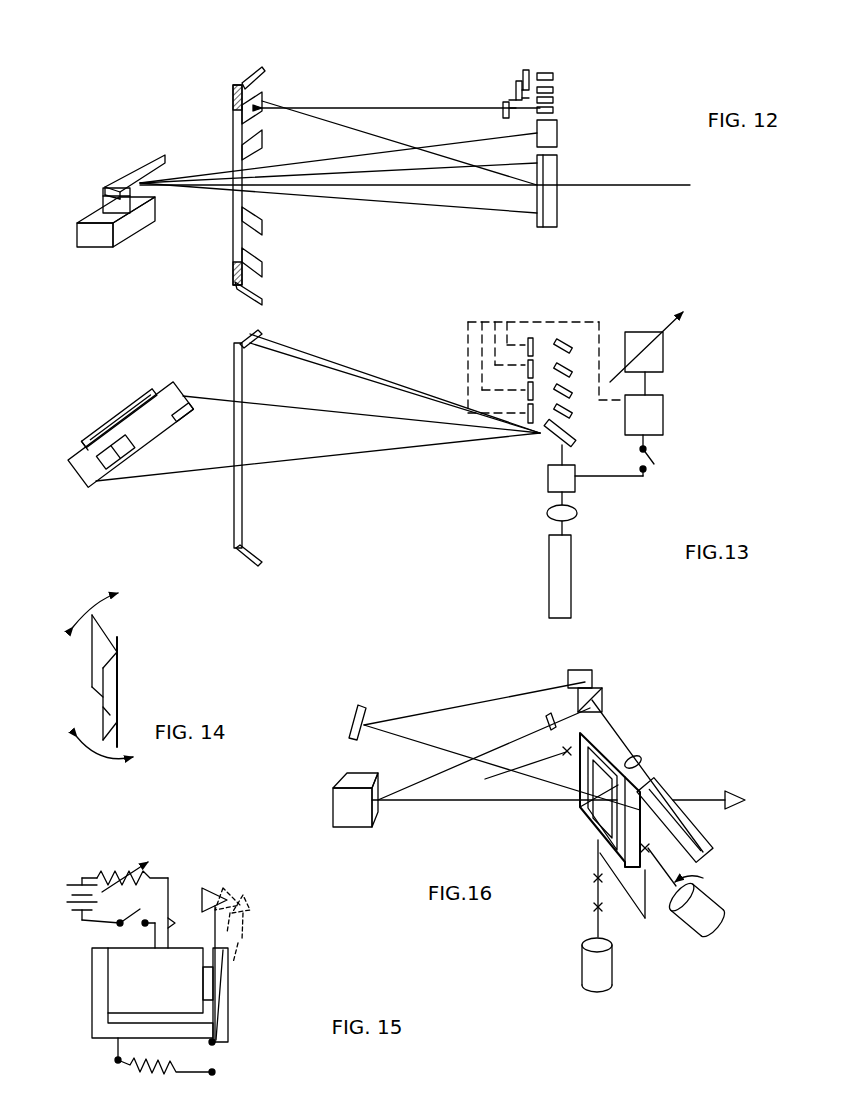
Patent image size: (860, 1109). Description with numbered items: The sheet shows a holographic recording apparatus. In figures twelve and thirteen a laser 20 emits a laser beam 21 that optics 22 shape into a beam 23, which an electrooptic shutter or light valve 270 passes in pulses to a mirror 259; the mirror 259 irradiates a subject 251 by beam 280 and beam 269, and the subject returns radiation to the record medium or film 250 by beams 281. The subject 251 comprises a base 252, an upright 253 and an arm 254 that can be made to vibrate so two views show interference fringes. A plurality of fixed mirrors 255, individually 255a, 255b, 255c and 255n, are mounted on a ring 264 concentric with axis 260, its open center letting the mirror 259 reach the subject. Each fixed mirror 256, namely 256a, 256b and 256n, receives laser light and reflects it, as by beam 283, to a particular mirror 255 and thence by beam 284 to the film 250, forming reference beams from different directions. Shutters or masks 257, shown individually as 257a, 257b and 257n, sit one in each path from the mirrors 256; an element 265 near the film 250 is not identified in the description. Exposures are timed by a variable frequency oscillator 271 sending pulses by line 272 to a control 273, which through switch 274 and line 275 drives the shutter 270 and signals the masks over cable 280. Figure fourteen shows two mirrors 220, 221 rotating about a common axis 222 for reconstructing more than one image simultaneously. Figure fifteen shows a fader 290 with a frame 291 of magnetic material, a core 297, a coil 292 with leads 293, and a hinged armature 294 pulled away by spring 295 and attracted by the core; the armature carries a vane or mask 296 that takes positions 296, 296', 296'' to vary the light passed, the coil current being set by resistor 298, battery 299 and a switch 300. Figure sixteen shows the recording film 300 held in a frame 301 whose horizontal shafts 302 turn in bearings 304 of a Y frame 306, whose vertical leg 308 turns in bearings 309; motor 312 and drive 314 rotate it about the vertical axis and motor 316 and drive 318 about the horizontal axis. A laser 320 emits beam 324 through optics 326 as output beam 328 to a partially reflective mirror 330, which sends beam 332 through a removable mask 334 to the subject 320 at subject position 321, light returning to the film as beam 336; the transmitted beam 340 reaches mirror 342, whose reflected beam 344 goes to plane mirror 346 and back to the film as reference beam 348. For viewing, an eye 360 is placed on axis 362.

In FIG. 13, the laser 20 is at (572, 569).
In FIG. 13, the laser beam 21 is at (565, 531).
In FIG. 13, the optics 22 is at (547, 514).
In FIG. 13, the beam 23 is at (566, 456).
In FIG. 12, the record medium 250 is at (558, 170).
In FIG. 12, the subject 251 is at (118, 262).
In FIG. 13, the subject 251 is at (110, 490).
In FIG. 12, the base 252 is at (83, 250).
In FIG. 13, the base 252 is at (75, 456).
In FIG. 12, the upright 253 is at (125, 200).
In FIG. 13, the upright 253 is at (115, 452).
In FIG. 12, the arm 254 is at (155, 150).
In FIG. 13, the arm 254 is at (125, 416).
In FIG. 13, the fixed mirrors 255 is at (246, 346).
In FIG. 12, the fixed mirror 255a is at (263, 300).
In FIG. 12, the fixed mirror 255b is at (263, 268).
In FIG. 12, the mirror segment c 255c is at (263, 228).
In FIG. 12, the fixed mirror 255n is at (264, 75).
In FIG. 13, the fixed mirrors 256 is at (566, 343).
In FIG. 12, the fixed mirror 256a is at (554, 110).
In FIG. 12, the fixed mirror 256b is at (554, 94).
In FIG. 12, the fixed mirror 256n is at (554, 74).
In FIG. 13, the shutters 257 is at (535, 340).
In FIG. 12, the stepped mirror a 257a is at (504, 105).
In FIG. 12, the stepped mirror b 257b is at (516, 90).
In FIG. 12, the stepped mirror n 257n is at (525, 68).
In FIG. 12, the mirror 259 is at (558, 133).
In FIG. 13, the mirror 259 is at (569, 432).
In FIG. 12, the axis 260 is at (640, 185).
In FIG. 12, the ring 264 is at (235, 276).
In FIG. 13, the ring 264 is at (243, 494).
In FIG. 12, the detector line 265 is at (558, 210).
In FIG. 13, the beam 269 is at (353, 416).
In FIG. 13, the electrooptic shutter 270 is at (548, 476).
In FIG. 13, the variable frequency oscillator 271 is at (664, 356).
In FIG. 13, the line 272 is at (648, 384).
In FIG. 13, the control 273 is at (664, 423).
In FIG. 13, the switch 274 is at (652, 456).
In FIG. 13, the line 275 is at (630, 479).
In FIG. 12, the beam 280 is at (297, 163).
In FIG. 13, the beam 280 is at (520, 320).
In FIG. 12, the beams 281 is at (365, 202).
In FIG. 12, the beam 283 is at (360, 106).
In FIG. 13, the beam 283 is at (338, 361).
In FIG. 12, the beam 284 is at (355, 136).
In FIG. 13, the beam 284 is at (375, 381).
In FIG. 14, the mirror 220 is at (100, 630).
In FIG. 14, the mirror 221 is at (117, 659).
In FIG. 14, the axis 222 is at (118, 686).
In FIG. 15, the fader 290 is at (250, 980).
In FIG. 15, the frame 291 is at (105, 1040).
In FIG. 15, the coil 292 is at (170, 991).
In FIG. 15, the leads 293 is at (185, 920).
In FIG. 15, the hinged armature 294 is at (229, 957).
In FIG. 15, the spring 295 is at (85, 921).
In FIG. 15, the vane 296 is at (221, 944).
In FIG. 15, the vane position 296' is at (251, 890).
In FIG. 15, the vane position 296'' is at (282, 920).
In FIG. 15, the core 297 is at (210, 983).
In FIG. 15, the resistor 298 is at (150, 861).
In FIG. 15, the battery 299 is at (85, 880).
In FIG. 16, the recording film 300 is at (600, 812).
In FIG. 16, the frame 301 is at (597, 853).
In FIG. 16, the horizontal shafts 302 is at (564, 750).
In FIG. 16, the bearings 304 is at (725, 861).
In FIG. 16, the Y frame 306 is at (580, 808).
In FIG. 16, the vertical leg 308 is at (595, 890).
In FIG. 16, the bearings 309 is at (603, 883).
In FIG. 16, the motor 312 is at (613, 979).
In FIG. 16, the drive 314 is at (595, 932).
In FIG. 16, the motor 316 is at (720, 928).
In FIG. 16, the drive 318 is at (703, 887).
In FIG. 16, the laser 320 is at (375, 824).
In FIG. 16, the subject position 321 is at (340, 760).
In FIG. 16, the beam 324 is at (645, 776).
In FIG. 16, the optics 326 is at (641, 759).
In FIG. 16, the output beam 328 is at (613, 728).
In FIG. 16, the partially reflective mirror 330 is at (603, 700).
In FIG. 16, the beam 332 is at (490, 749).
In FIG. 16, the removable mask 334 is at (550, 712).
In FIG. 16, the beam 336 is at (460, 803).
In FIG. 16, the beam 340 is at (592, 683).
In FIG. 16, the succeeding mirror 342 is at (583, 670).
In FIG. 16, the reflected beam 344 is at (425, 714).
In FIG. 16, the plane mirror 346 is at (365, 706).
In FIG. 16, the reference beam 348 is at (425, 745).
In FIG. 16, the eye 360 is at (737, 796).
In FIG. 16, the axis 362 is at (700, 797).